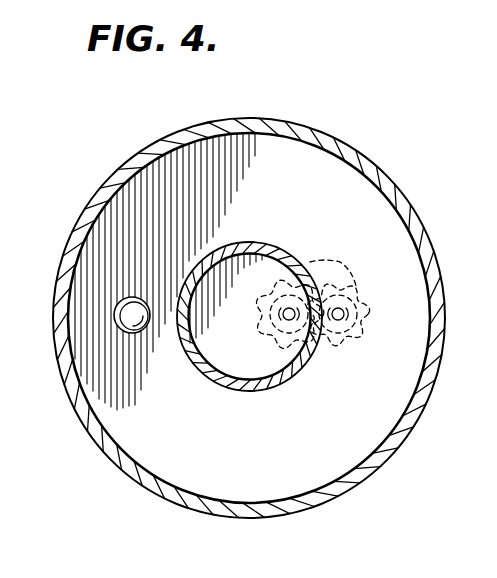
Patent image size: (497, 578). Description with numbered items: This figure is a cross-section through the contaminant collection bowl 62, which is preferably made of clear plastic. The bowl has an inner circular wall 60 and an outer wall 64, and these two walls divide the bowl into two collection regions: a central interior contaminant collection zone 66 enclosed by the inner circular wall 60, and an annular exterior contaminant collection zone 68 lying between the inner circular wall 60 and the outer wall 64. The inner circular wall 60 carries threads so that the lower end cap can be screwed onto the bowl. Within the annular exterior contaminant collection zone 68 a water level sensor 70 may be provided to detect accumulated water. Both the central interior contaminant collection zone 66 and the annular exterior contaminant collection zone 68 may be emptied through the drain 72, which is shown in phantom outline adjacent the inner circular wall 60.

The inner circular wall 60 is at (270, 242).
The contaminant collection bowl 62 is at (167, 133).
The outer wall 64 is at (113, 174).
The central interior contaminant collection zone 66 is at (256, 363).
The annular exterior contaminant collection zone 68 is at (307, 160).
The water level sensor 70 is at (147, 326).
The drain 72 is at (343, 258).